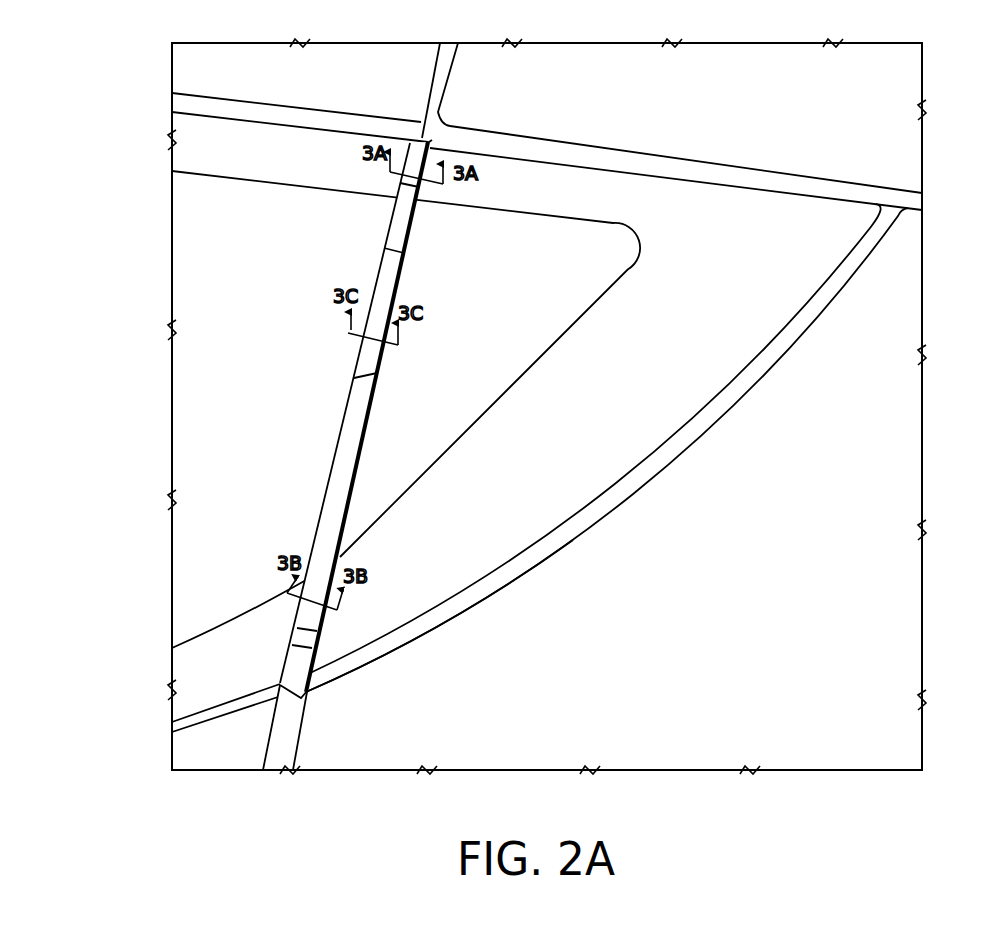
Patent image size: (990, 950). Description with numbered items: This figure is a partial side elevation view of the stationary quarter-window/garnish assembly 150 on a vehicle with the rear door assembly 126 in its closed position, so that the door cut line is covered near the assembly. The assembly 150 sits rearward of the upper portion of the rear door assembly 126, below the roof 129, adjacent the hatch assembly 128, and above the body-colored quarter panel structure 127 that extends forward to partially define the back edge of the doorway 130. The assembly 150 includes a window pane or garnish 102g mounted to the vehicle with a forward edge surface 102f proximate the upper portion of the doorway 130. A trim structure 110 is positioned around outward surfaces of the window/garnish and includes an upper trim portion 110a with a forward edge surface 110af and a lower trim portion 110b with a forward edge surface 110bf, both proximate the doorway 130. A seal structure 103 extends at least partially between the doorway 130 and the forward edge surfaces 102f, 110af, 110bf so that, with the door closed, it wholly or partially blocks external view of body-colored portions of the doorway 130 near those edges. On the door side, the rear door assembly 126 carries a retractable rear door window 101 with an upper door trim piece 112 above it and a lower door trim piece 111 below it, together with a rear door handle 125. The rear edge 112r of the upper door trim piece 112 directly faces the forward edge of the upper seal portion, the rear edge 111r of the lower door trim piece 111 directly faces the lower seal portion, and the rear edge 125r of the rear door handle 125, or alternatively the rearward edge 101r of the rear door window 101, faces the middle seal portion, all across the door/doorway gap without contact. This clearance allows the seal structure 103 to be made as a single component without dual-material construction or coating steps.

The stationary quarter-window/garnish assembly 150 is at (88, 41).
The seal structure 103 is at (421, 122).
The roof 129 is at (182, 77).
The upper door trim piece 112 is at (182, 163).
The rear edge of upper door trim piece 112r is at (428, 143).
The upper trim portion 110a is at (570, 183).
The hatch assembly 128 is at (913, 167).
The forward edge surface of upper trim portion 110af is at (400, 183).
The forward edge surface of window pane/garnish 102f is at (384, 248).
The rear door window 101 is at (250, 417).
The rear door handle 125 is at (182, 400).
The rearward edge of rear door window 101r is at (430, 373).
The rear edge of rear door handle 125r is at (377, 373).
The garnish 102g is at (470, 410).
The trim structure 110 is at (722, 390).
The lower trim portion 110b is at (438, 557).
The quarter panel structure 127 is at (913, 610).
The lower door trim piece 111 is at (190, 654).
The rear edge of lower door trim piece 111r is at (317, 631).
The forward edge surface of lower trim portion 110bf is at (292, 645).
The rear door assembly 126 is at (183, 758).
The doorway 130 is at (300, 722).